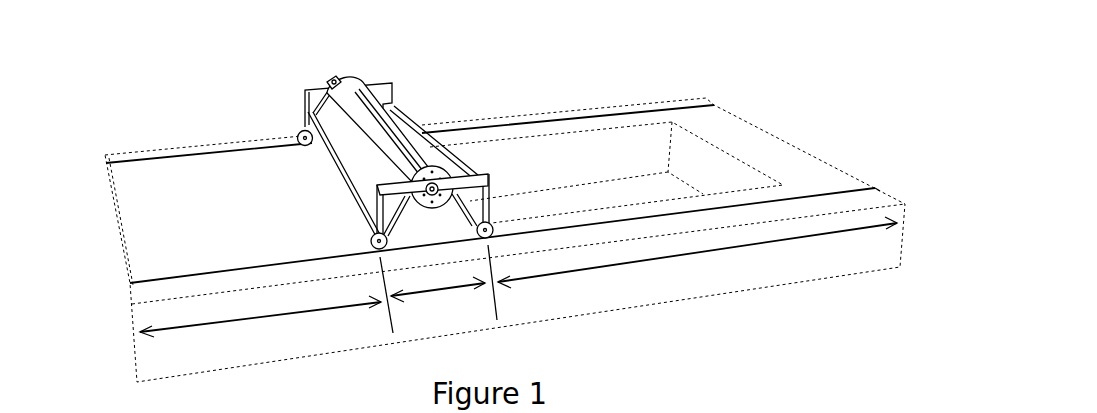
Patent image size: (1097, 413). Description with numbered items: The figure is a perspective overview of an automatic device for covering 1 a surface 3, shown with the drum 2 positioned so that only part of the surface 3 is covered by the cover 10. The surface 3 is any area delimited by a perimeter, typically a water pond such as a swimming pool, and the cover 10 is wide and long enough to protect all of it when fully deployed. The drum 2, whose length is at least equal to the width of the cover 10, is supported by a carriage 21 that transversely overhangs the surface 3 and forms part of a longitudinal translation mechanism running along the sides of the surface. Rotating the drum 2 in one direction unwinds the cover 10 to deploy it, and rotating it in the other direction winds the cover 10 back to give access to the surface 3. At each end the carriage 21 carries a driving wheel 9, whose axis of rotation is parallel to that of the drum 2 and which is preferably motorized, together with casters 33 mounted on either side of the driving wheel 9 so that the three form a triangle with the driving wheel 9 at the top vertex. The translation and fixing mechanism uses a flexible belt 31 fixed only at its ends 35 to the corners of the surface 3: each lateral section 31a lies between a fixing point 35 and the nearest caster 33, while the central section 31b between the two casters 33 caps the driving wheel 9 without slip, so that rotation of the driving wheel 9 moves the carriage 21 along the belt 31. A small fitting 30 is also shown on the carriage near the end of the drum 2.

The automatic device for covering a surface 1 is at (793, 72).
The drum 2 is at (386, 124).
The surface 3 is at (648, 137).
The driving wheel 9 is at (425, 172).
The cover 10 is at (167, 235).
The carriage 21 is at (308, 100).
The clamp 30 is at (335, 78).
The flexible belt 31 is at (250, 268).
The lateral section 31a is at (518, 288).
The central section 31b is at (438, 304).
The caster 33 is at (376, 242).
The fixing point 35 is at (873, 187).